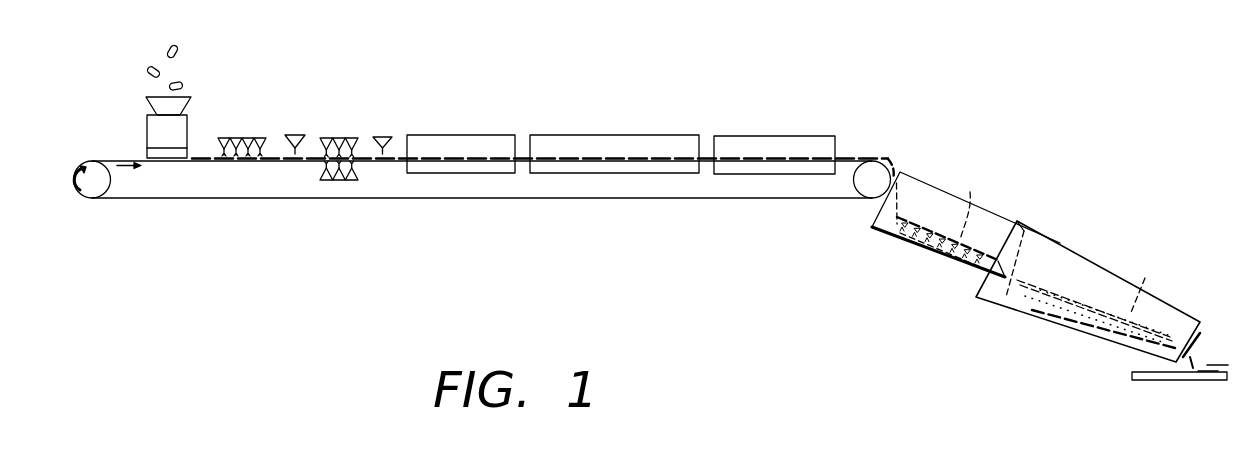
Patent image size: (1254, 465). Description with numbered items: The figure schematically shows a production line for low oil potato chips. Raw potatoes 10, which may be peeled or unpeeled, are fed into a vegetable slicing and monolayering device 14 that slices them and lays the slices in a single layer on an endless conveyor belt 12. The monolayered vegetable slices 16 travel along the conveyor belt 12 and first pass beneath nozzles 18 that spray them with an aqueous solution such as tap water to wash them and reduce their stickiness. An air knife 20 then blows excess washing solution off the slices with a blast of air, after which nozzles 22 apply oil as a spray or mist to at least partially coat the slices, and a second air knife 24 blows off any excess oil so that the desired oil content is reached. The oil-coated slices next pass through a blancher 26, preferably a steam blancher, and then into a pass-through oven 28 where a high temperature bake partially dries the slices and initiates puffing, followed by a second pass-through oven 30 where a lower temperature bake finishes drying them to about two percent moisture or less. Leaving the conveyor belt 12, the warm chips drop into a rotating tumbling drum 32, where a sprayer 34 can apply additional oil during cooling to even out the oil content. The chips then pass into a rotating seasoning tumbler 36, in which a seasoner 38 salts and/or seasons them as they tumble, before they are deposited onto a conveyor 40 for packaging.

The raw potatoes 10 is at (184, 39).
The endless conveyor belt 12 is at (108, 157).
The vegetable slicing and monolayering device 14 is at (188, 126).
The monolayered vegetable slices 16 is at (204, 157).
The nozzles 18 is at (243, 160).
The air knife 20 is at (293, 114).
The nozzles 22 is at (343, 114).
The air knife 24 is at (389, 114).
The blancher 26 is at (465, 135).
The pass-through oven 28 is at (617, 135).
The pass-through oven 30 is at (780, 137).
The rotating tumbling drum 32 is at (933, 157).
The sprayer 34 is at (977, 187).
The rotating seasoning tumbler 36 is at (1069, 245).
The seasoner 38 is at (1148, 285).
The conveyor 40 is at (1186, 383).